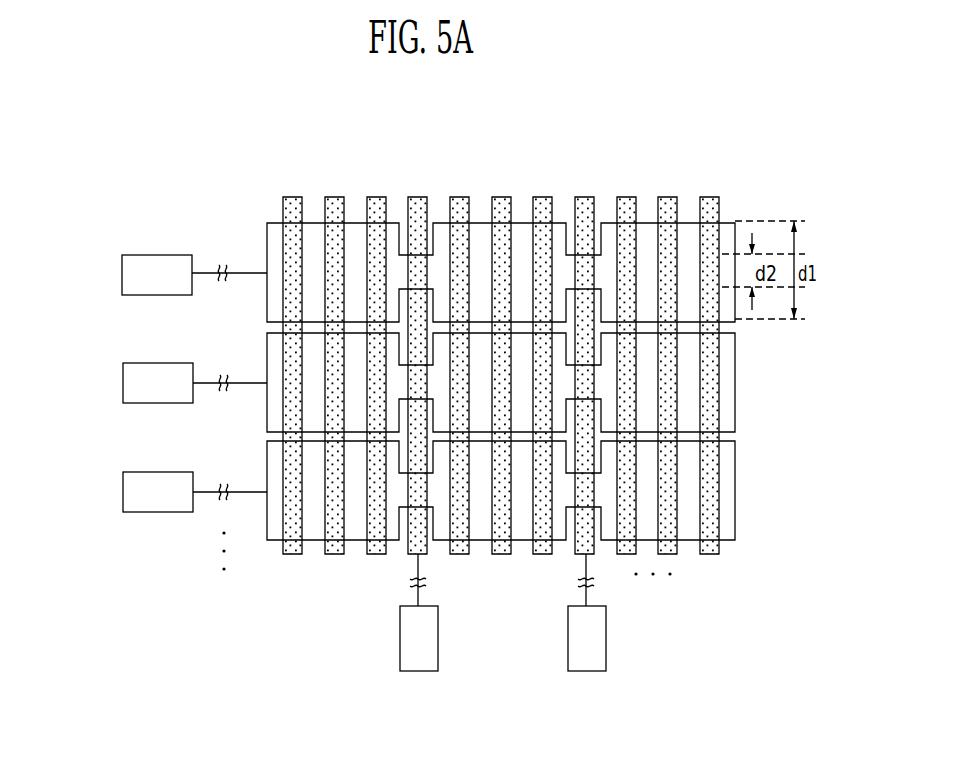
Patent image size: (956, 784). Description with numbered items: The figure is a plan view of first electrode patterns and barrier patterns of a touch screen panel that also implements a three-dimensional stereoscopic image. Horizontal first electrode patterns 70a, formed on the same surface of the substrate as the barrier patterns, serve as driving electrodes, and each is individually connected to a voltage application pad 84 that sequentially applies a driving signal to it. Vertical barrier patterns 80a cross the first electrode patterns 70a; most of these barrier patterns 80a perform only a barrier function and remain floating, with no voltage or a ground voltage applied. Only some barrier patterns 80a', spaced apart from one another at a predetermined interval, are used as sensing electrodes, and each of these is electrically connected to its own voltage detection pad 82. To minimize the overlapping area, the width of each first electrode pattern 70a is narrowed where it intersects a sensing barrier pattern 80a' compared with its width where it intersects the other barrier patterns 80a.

The first electrode pattern 70a is at (267, 237).
The barrier pattern 80a is at (499, 347).
The barrier pattern used as sensing electrode 80a' is at (504, 347).
The voltage application pad 84 is at (122, 273).
The voltage detection pad 82 is at (420, 672).